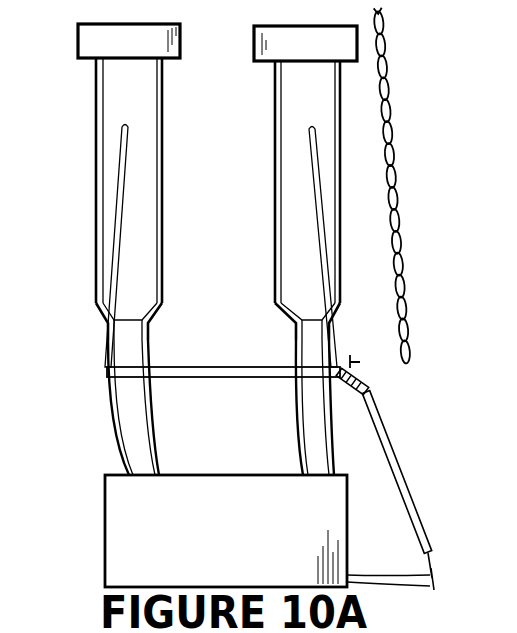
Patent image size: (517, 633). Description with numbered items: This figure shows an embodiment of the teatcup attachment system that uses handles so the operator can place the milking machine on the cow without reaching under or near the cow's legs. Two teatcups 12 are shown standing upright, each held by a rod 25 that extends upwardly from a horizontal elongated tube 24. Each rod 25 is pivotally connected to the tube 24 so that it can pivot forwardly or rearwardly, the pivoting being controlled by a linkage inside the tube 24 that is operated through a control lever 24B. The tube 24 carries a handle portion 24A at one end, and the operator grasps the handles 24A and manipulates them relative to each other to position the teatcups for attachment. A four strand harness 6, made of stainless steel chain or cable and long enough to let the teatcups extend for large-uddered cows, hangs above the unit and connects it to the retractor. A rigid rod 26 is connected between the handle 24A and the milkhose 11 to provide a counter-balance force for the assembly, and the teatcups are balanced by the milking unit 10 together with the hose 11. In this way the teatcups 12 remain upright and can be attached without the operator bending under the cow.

The teatcup 12 is at (96, 73).
The rod 25 is at (300, 142).
The four strand harness 6 is at (367, 138).
The control lever 24B is at (360, 362).
The elongated tube 24 is at (107, 372).
The handle portion 24A is at (368, 382).
The rigid rod 26 is at (385, 432).
The milking unit 10 is at (104, 510).
The milkhose 11 is at (378, 573).